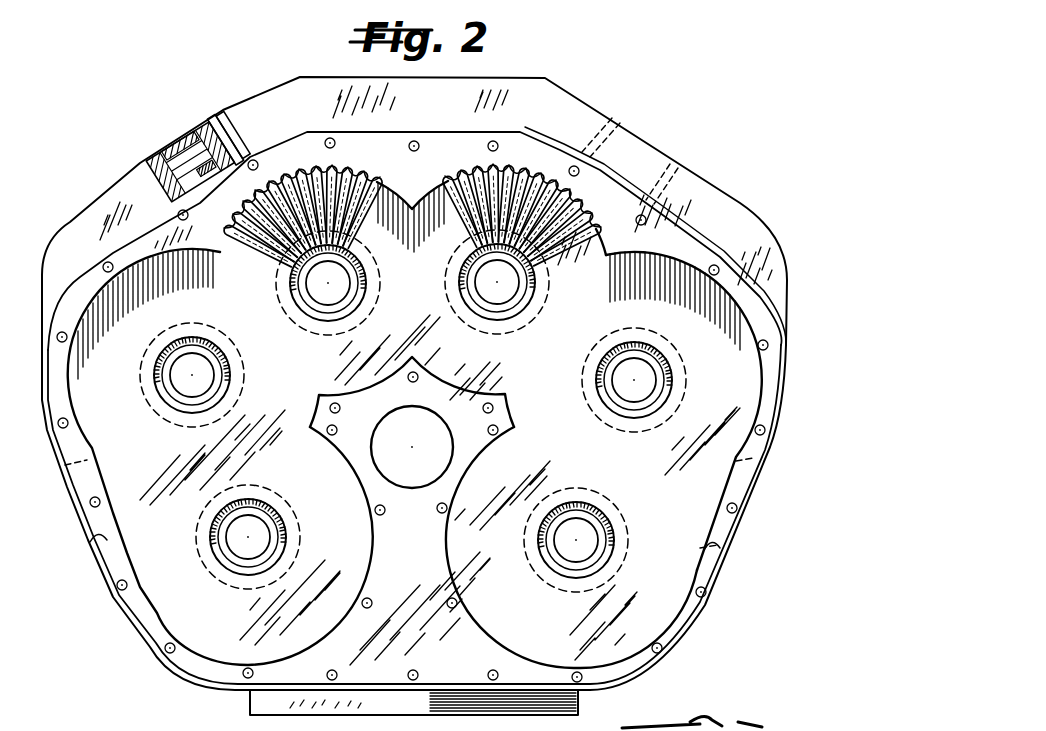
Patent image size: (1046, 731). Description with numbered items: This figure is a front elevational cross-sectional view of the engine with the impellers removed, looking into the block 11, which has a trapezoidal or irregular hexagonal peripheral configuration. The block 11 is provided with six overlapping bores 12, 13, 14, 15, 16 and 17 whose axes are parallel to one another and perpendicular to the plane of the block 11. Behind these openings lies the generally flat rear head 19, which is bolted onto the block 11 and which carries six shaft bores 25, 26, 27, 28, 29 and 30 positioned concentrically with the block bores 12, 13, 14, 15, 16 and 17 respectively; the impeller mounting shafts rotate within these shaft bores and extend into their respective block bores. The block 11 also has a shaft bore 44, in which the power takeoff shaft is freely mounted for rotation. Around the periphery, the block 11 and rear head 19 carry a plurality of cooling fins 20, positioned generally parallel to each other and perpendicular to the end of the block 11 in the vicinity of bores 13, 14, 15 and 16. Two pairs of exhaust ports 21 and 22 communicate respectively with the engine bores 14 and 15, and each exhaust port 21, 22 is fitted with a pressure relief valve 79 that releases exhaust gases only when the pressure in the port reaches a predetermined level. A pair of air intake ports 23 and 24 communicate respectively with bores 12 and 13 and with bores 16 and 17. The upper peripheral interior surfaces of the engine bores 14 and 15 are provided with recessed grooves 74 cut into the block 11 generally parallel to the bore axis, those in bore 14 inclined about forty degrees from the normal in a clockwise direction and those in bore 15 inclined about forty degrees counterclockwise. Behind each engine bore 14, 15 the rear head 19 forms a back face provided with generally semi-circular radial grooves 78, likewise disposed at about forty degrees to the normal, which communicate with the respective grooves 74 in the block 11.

The block 11 is at (393, 667).
The bore 12 is at (215, 670).
The bore 13 is at (99, 302).
The bore 14 is at (389, 186).
The bore 15 is at (416, 198).
The bore 16 is at (678, 270).
The bore 17 is at (672, 612).
The rear head 19 is at (158, 613).
The cooling fins 20 is at (576, 100).
The exhaust ports 21 is at (219, 118).
The exhaust ports 22 is at (620, 118).
The air intake port 23 is at (110, 537).
The air intake port 24 is at (712, 545).
The shaft bore 25 is at (268, 543).
The shaft bore 26 is at (212, 377).
The shaft bore 27 is at (343, 287).
The shaft bore 28 is at (511, 287).
The shaft bore 29 is at (655, 375).
The shaft bore 30 is at (587, 536).
The shaft bore 44 is at (421, 484).
The recessed grooves 74 is at (311, 162).
The radial grooves 78 is at (363, 181).
The pressure relief valve 79 is at (195, 136).